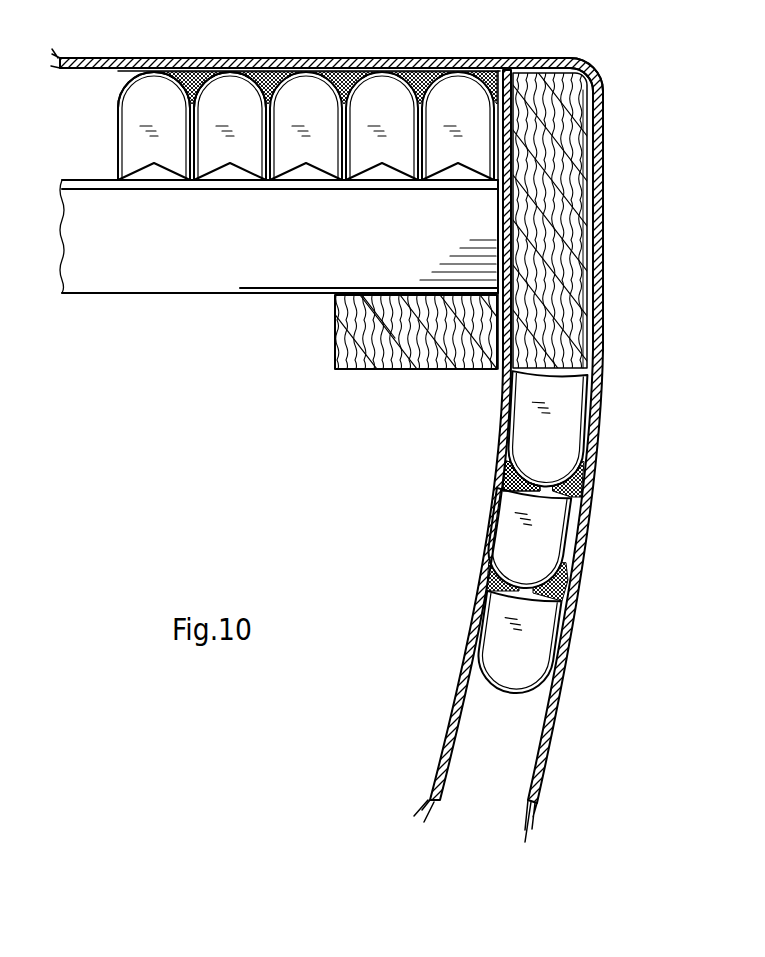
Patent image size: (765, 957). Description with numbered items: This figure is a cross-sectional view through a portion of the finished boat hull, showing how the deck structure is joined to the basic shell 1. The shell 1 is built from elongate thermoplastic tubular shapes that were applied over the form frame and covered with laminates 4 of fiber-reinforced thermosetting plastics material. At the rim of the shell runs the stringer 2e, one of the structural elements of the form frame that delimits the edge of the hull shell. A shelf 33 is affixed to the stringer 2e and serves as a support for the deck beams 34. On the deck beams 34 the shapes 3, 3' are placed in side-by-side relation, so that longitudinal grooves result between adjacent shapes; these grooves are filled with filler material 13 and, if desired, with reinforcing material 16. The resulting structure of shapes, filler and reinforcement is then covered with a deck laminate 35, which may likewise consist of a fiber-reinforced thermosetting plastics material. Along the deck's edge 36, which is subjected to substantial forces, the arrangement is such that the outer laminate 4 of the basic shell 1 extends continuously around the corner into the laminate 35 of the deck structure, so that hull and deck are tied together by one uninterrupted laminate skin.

The boat hull shell 1 is at (456, 661).
The stringer 2e is at (572, 250).
The tubular shape 3 is at (374, 384).
The thermoplastic tubular shape 3' is at (192, 95).
The laminate 4 is at (492, 521).
The filler material 13 is at (343, 72).
The reinforcing material 16 is at (521, 476).
The shelf 33 is at (387, 345).
The deck beam 34 is at (212, 270).
The deck laminate 35 is at (150, 58).
The deck's edge 36 is at (577, 88).